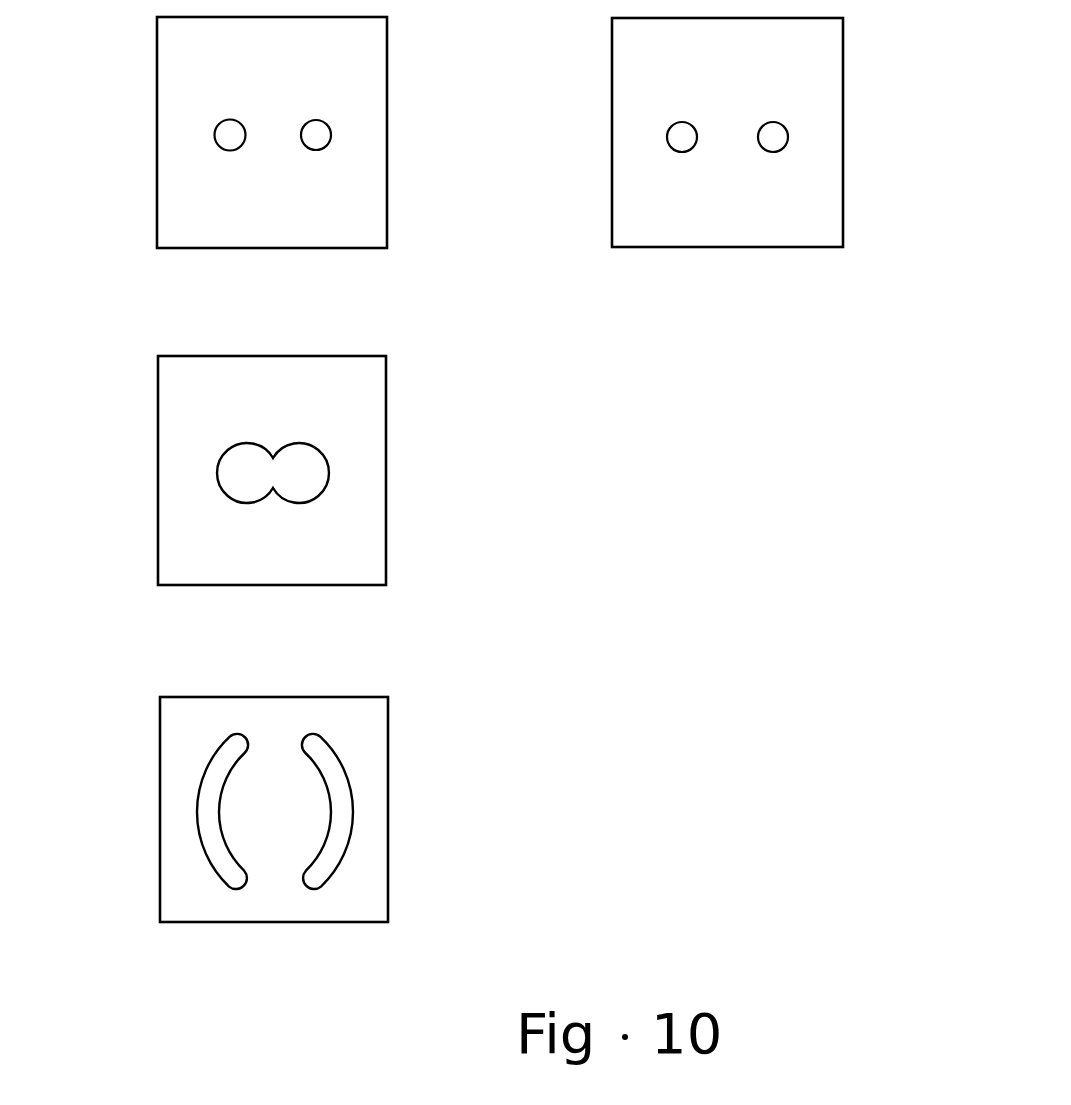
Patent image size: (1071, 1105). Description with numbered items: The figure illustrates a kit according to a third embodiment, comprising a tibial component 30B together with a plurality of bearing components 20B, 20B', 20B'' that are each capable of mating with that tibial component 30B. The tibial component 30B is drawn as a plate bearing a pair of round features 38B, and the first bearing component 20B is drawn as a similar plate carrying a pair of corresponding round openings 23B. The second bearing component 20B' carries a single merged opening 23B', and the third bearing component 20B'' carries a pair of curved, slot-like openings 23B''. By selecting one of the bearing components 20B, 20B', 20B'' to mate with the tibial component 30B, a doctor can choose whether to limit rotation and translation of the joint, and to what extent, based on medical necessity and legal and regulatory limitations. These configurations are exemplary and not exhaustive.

The bearing component 20B is at (216, 132).
The holes 23B is at (388, 177).
The tibial component 30B is at (852, 20).
The holes 38B is at (773, 137).
The bearing component 20B' is at (216, 470).
The hole 23B' is at (375, 498).
The bearing component 20B'' is at (222, 809).
The slots 23B'' is at (360, 811).